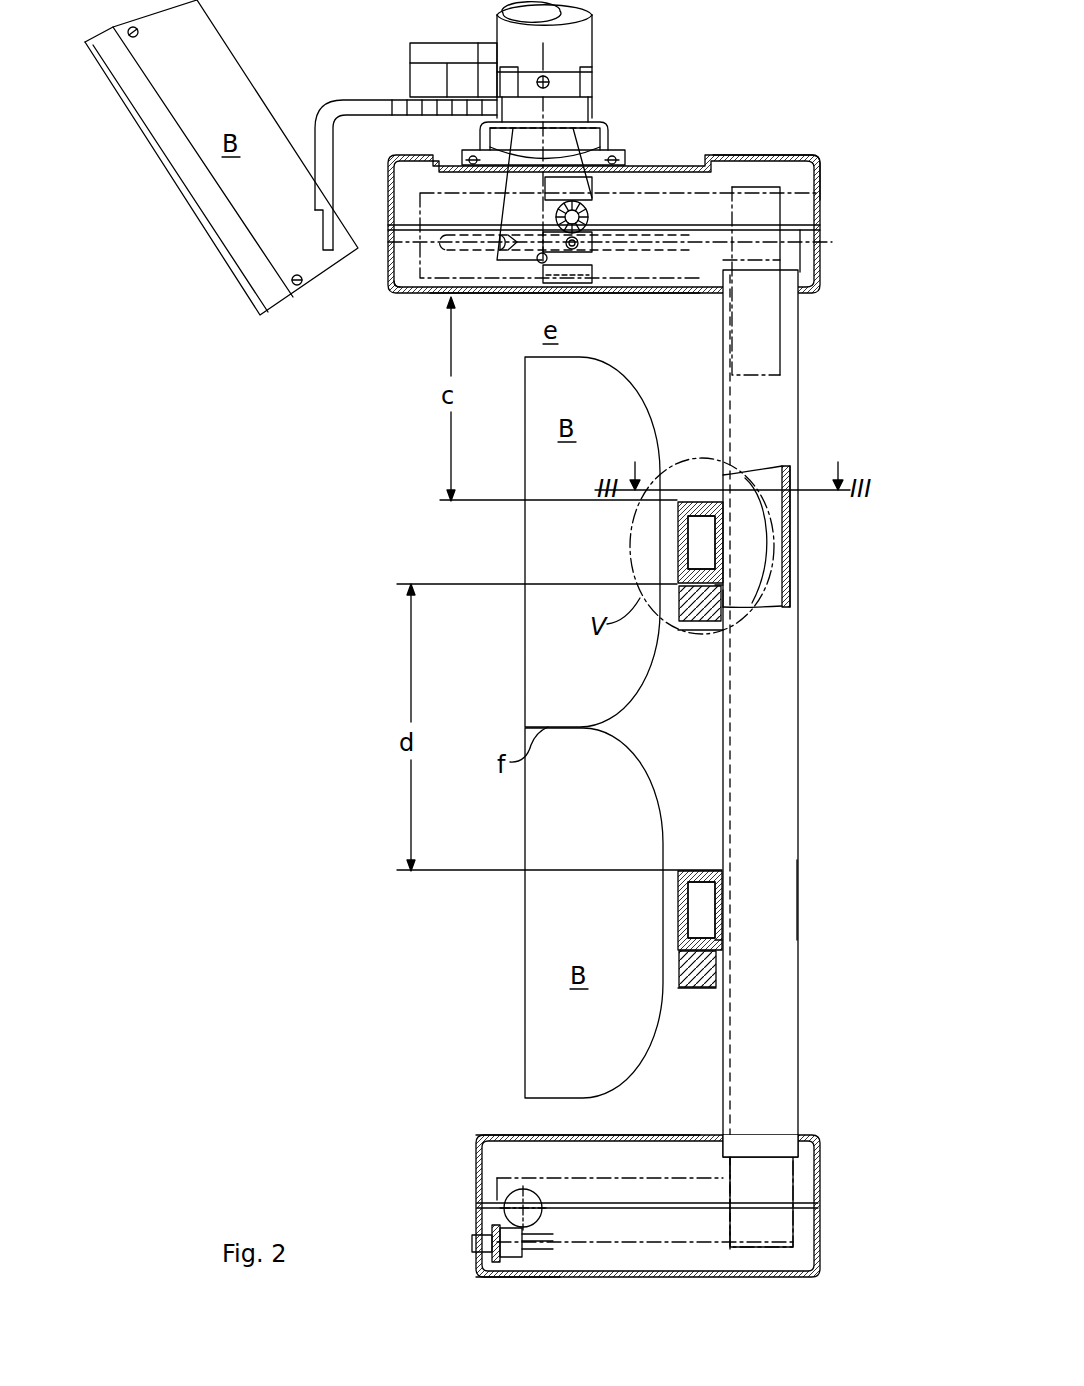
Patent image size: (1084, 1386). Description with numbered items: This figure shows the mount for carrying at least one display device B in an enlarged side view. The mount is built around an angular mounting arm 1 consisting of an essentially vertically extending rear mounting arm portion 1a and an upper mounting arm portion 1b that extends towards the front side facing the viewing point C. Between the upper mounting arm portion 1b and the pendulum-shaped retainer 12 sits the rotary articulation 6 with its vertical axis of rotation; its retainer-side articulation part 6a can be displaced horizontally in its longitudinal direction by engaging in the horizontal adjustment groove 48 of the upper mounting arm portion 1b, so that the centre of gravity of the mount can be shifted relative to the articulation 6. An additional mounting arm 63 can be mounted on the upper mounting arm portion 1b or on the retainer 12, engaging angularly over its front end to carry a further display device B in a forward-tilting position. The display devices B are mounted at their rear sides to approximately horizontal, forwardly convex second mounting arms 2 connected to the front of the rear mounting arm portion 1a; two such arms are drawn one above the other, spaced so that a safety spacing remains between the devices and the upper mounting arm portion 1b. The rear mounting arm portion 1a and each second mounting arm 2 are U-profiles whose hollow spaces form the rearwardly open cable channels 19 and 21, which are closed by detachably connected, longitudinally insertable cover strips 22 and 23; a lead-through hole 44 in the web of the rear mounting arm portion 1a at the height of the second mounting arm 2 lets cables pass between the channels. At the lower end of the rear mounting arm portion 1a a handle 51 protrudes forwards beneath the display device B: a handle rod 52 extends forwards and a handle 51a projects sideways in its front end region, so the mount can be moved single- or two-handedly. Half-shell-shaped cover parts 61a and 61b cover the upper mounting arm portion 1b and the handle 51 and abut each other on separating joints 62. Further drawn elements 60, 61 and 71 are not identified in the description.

The angular mounting arm 1 is at (778, 147).
The rear mounting arm portion 1a is at (800, 388).
The upper mounting arm portion 1b is at (406, 275).
The second mounting arm 2 is at (678, 528).
The rotary articulation 6 is at (600, 113).
The retainer-side articulation part 6a is at (580, 62).
The retainer 12 is at (576, 34).
The cable channel 19 is at (792, 522).
The cable channel 21 is at (720, 552).
The cover strip 22 is at (793, 552).
The cover strip 23 is at (770, 600).
The lead-through hole 44 is at (738, 523).
The horizontal adjustment groove 48 is at (443, 298).
The handle 51 is at (590, 1252).
The handle 51a is at (497, 1192).
The handle rod 52 is at (628, 1232).
The connector 60 is at (470, 1248).
The connector plate 61 is at (470, 1218).
The cover part 61a is at (800, 156).
The cover part 61b is at (652, 296).
The separating joint 62 is at (505, 1207).
The additional mounting arm 63 is at (333, 110).
The holder block 71 is at (705, 645).